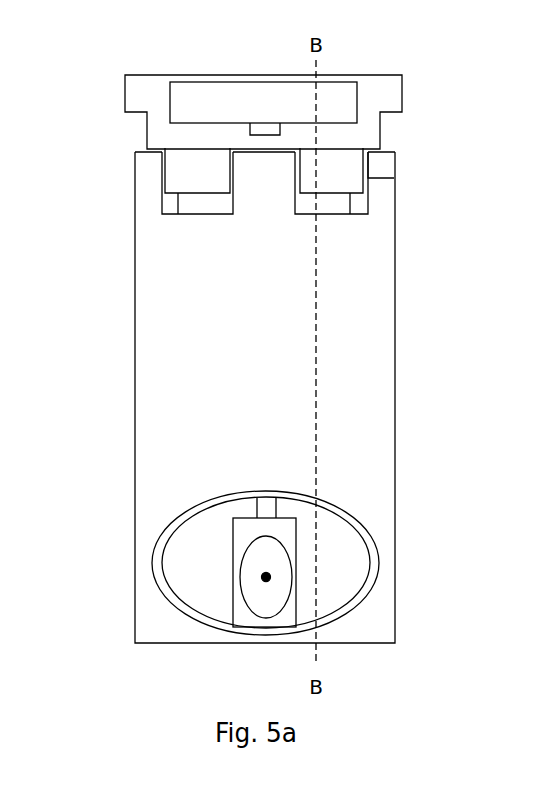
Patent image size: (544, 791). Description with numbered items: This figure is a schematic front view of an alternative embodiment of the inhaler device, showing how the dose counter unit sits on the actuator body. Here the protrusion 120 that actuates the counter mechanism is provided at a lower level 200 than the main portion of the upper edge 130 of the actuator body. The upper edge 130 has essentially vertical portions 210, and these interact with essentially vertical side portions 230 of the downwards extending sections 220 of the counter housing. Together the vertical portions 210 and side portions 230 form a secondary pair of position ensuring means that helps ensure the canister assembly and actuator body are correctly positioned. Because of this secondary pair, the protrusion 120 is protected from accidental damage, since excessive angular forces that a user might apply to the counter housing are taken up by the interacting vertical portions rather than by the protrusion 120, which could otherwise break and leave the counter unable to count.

The top edge 130 is at (386, 151).
The protrusion 120 is at (262, 192).
The downwards extending sections 220 is at (188, 175).
The lower level 200 is at (335, 216).
The vertical side portions 230 is at (363, 171).
The vertical portions 210 is at (363, 171).